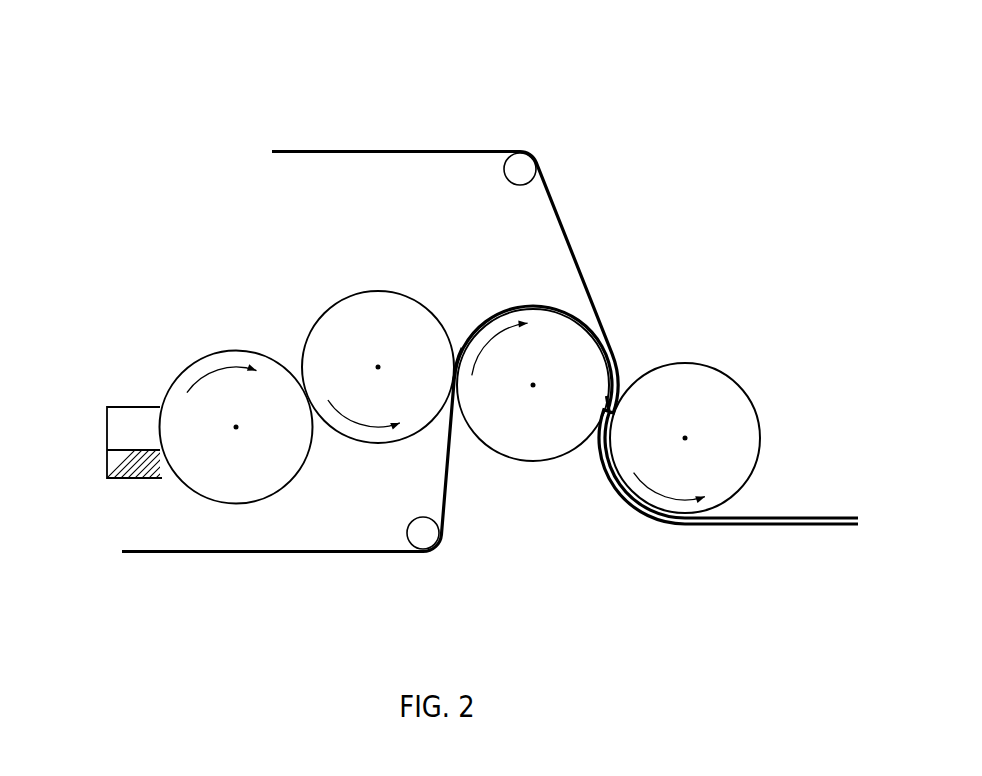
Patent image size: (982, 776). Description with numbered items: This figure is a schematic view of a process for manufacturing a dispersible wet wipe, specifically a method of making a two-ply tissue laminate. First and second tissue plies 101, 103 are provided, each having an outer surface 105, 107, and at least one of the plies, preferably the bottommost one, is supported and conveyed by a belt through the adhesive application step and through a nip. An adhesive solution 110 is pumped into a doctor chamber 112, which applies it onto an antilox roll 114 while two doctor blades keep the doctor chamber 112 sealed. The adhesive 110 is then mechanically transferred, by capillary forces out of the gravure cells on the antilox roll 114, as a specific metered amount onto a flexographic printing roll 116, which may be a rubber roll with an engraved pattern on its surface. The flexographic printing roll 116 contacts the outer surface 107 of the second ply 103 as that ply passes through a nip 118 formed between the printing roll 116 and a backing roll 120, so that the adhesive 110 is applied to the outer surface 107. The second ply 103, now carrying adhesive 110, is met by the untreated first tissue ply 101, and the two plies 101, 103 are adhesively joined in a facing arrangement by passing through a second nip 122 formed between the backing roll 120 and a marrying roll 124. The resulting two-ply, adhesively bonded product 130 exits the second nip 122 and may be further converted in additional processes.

The first tissue ply 101 is at (336, 125).
The second tissue ply 103 is at (253, 568).
The outer surface 105 is at (396, 158).
The outer surface 107 is at (337, 544).
The adhesive solution 110 is at (135, 470).
The doctor chamber 112 is at (129, 434).
The antilox roll 114 is at (213, 362).
The flexographic printing roll 116 is at (340, 327).
The nip 118 is at (457, 325).
The backing roll 120 is at (542, 327).
The second nip 122 is at (594, 446).
The marrying roll 124 is at (707, 388).
The product 130 is at (829, 538).